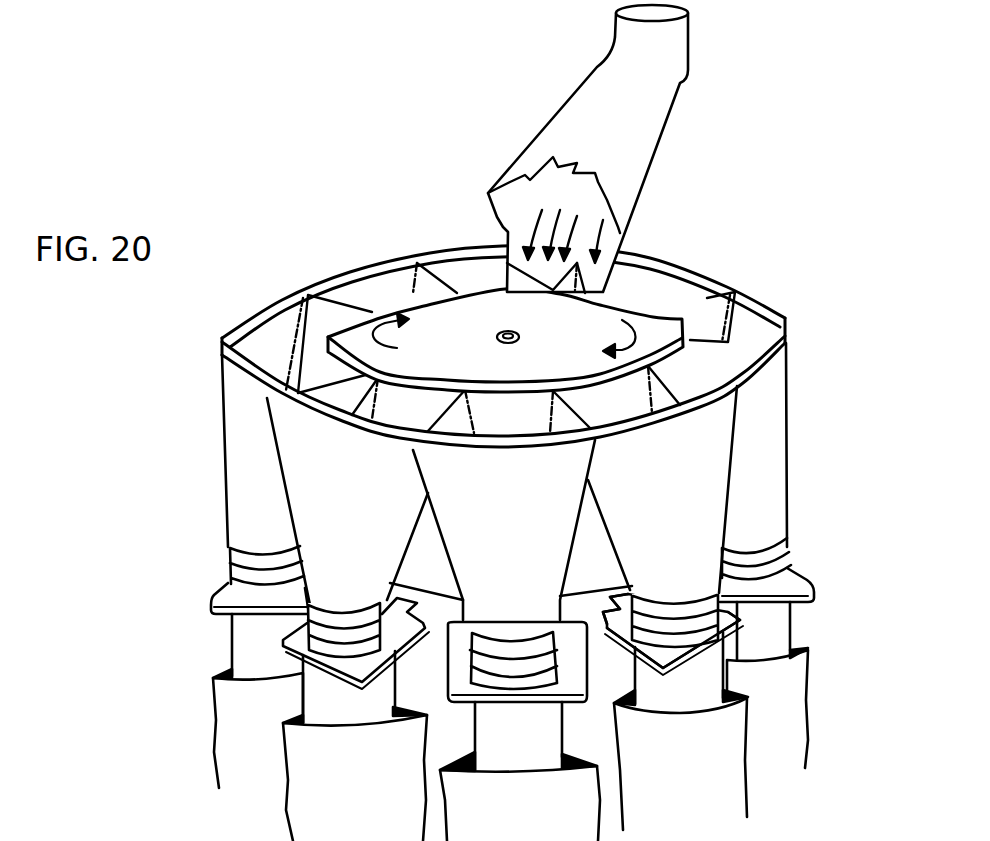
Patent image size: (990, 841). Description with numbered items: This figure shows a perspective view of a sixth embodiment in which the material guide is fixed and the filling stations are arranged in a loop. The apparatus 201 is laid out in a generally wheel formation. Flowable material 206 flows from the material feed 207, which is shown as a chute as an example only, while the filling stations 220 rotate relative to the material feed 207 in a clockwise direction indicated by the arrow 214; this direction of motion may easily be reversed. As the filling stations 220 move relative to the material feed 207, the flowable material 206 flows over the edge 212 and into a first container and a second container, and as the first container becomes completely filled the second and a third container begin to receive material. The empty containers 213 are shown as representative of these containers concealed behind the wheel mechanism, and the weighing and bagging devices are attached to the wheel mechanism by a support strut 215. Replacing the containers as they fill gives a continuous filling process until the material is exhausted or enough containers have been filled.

The apparatus 201 is at (768, 430).
The flowable material 206 is at (568, 198).
The material feed 207 is at (643, 78).
The edge 212 is at (560, 283).
The empty containers 213 is at (700, 762).
The arrow 214 is at (655, 316).
The support strut 215 is at (220, 598).
The filling stations 220 is at (767, 643).